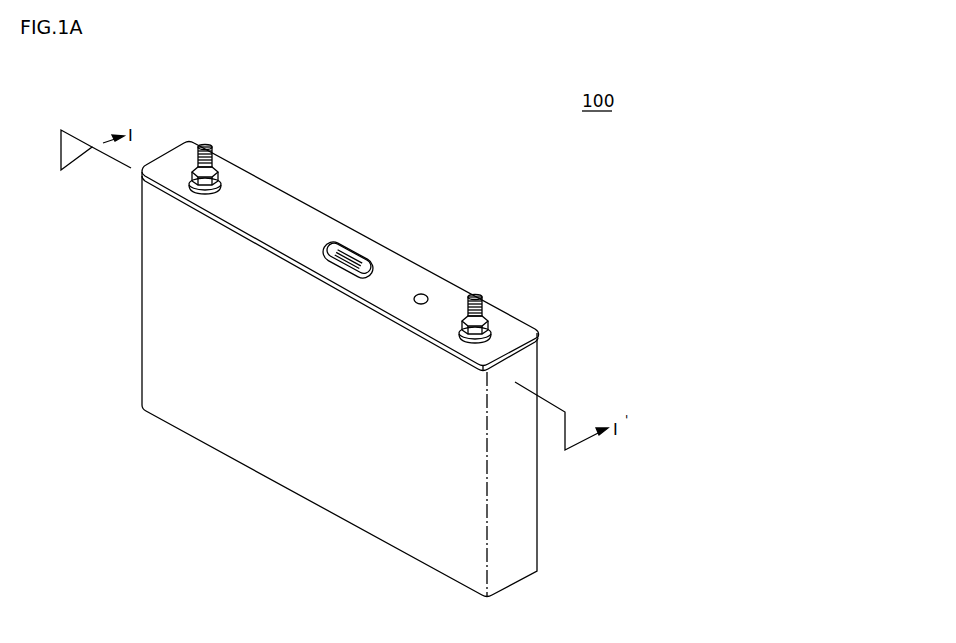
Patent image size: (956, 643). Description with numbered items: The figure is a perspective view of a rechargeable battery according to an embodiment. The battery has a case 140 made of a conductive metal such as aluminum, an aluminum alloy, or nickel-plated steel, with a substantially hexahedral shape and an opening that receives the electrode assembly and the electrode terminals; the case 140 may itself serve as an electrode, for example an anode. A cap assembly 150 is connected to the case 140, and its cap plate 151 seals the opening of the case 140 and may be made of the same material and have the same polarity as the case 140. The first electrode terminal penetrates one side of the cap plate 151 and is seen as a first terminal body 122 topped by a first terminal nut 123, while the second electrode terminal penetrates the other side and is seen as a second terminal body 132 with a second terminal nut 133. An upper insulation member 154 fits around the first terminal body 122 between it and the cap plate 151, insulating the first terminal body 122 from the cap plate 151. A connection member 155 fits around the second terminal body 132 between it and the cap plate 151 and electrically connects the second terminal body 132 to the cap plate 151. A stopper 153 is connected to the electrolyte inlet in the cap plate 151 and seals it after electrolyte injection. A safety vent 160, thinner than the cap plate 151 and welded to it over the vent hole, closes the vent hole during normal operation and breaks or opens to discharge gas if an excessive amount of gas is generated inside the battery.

The first terminal body 122 is at (201, 147).
The first terminal nut 123 is at (215, 170).
The second terminal body 132 is at (472, 297).
The second terminal nut 133 is at (484, 321).
The case 140 is at (290, 477).
The cap assembly 150 is at (398, 252).
The cap plate 151 is at (298, 215).
The stopper 153 is at (424, 292).
The upper insulation member 154 is at (218, 185).
The connection member 155 is at (491, 333).
The safety vent 160 is at (360, 247).